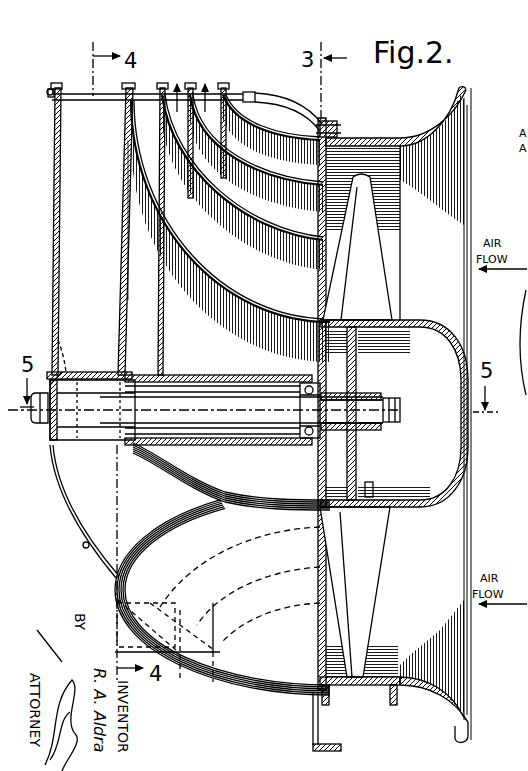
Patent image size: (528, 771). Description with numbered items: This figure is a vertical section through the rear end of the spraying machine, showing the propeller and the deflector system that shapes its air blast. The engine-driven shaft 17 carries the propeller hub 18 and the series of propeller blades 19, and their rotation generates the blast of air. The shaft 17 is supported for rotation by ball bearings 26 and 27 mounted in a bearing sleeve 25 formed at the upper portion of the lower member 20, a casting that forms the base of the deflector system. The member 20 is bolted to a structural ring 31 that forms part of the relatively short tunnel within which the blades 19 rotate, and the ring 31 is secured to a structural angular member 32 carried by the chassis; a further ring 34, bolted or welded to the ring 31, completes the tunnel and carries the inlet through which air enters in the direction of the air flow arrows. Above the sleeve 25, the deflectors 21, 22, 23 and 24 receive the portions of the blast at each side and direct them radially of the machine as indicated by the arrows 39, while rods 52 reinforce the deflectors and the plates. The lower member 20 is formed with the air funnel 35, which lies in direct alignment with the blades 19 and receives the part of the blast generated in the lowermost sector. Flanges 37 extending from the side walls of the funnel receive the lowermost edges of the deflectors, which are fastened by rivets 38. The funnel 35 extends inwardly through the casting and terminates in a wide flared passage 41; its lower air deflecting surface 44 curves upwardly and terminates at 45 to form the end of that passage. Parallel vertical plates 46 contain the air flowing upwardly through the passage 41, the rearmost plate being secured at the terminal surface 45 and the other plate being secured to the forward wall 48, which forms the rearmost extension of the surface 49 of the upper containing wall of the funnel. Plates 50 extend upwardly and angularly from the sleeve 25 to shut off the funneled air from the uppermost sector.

The shaft 17 is at (40, 427).
The propeller hub 18 is at (373, 394).
The propeller blades 19 is at (376, 285).
The lower member 20 is at (62, 522).
The deflector 21 is at (276, 107).
The deflector 22 is at (288, 98).
The deflector 23 is at (160, 148).
The central deflector 24 is at (128, 130).
The bearing sleeve 25 is at (163, 375).
The ball bearing 26 is at (56, 365).
The ball bearing 27 is at (305, 383).
The structural ring 31 is at (355, 686).
The structural angular member 32 is at (312, 702).
The ring 34 is at (440, 700).
The air funnel 35 is at (218, 548).
The flanges 37 is at (188, 656).
The rivets 38 is at (115, 606).
The arrows 39 is at (198, 85).
The flared passage 41 is at (230, 430).
The lower air deflecting surface 44 is at (82, 546).
The terminal end of surface 44 45 is at (72, 378).
The vertical plates 46 is at (120, 196).
The forward wall 48 is at (92, 429).
The upper containing wall surface 49 is at (173, 470).
The plates 50 is at (70, 93).
The rods 52 is at (212, 105).